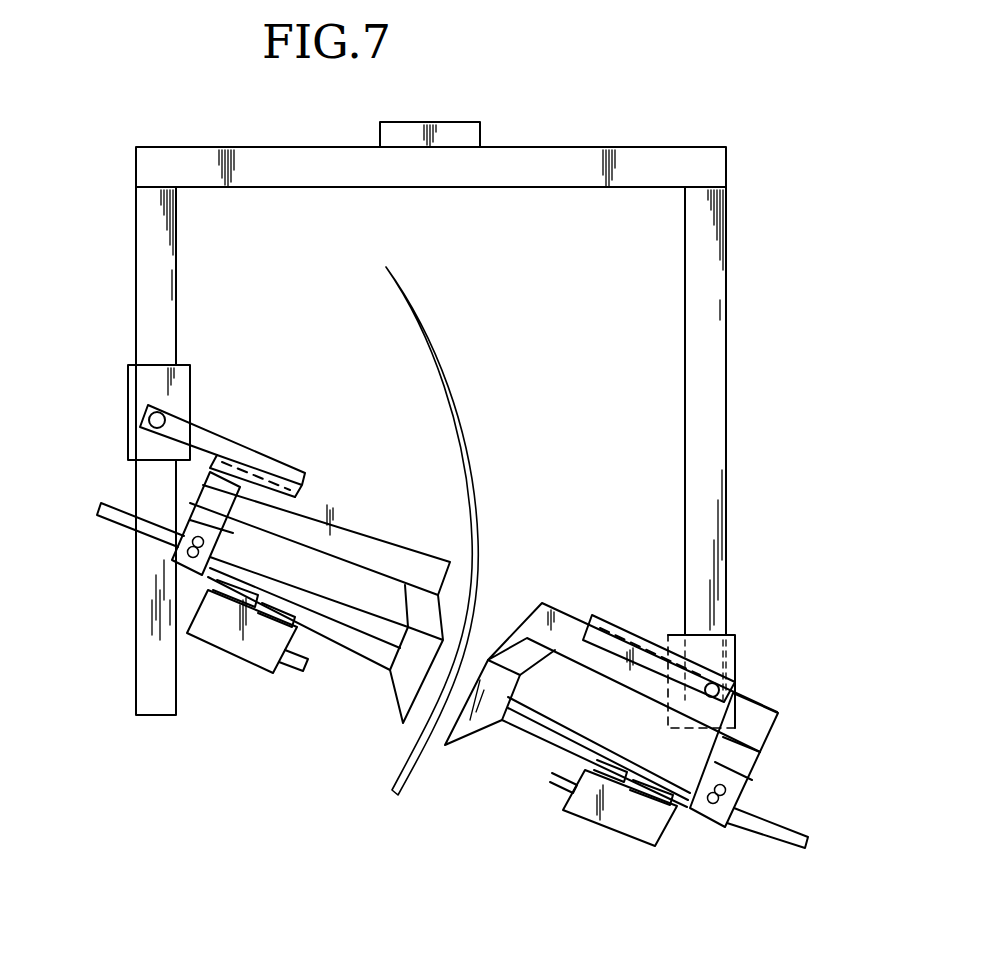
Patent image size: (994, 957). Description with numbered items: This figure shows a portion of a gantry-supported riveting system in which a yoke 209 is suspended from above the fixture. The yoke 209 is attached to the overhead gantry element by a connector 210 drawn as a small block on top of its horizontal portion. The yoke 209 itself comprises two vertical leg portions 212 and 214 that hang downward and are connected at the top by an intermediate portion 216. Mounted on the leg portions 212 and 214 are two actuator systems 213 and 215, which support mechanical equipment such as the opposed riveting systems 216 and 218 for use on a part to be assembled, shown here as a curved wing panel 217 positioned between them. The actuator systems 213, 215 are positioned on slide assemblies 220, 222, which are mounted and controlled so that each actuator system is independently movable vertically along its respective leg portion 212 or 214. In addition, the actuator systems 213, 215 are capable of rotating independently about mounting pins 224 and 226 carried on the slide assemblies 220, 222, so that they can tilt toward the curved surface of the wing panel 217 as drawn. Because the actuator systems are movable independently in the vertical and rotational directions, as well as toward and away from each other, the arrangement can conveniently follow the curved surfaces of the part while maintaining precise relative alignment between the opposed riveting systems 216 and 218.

The yoke 209 is at (434, 408).
The connector 210 is at (422, 124).
The vertical leg portion 212 is at (150, 265).
The actuator system 213 is at (277, 444).
The vertical leg portion 214 is at (712, 305).
The actuator system 215 is at (645, 623).
The intermediate portion / riveting system 216 is at (245, 655).
The wing panel 217 is at (450, 385).
The riveting system 218 is at (603, 808).
The slide assembly 220 is at (150, 384).
The slide assembly 222 is at (712, 652).
The mounting pin 224 is at (150, 427).
The mounting pin 226 is at (720, 688).